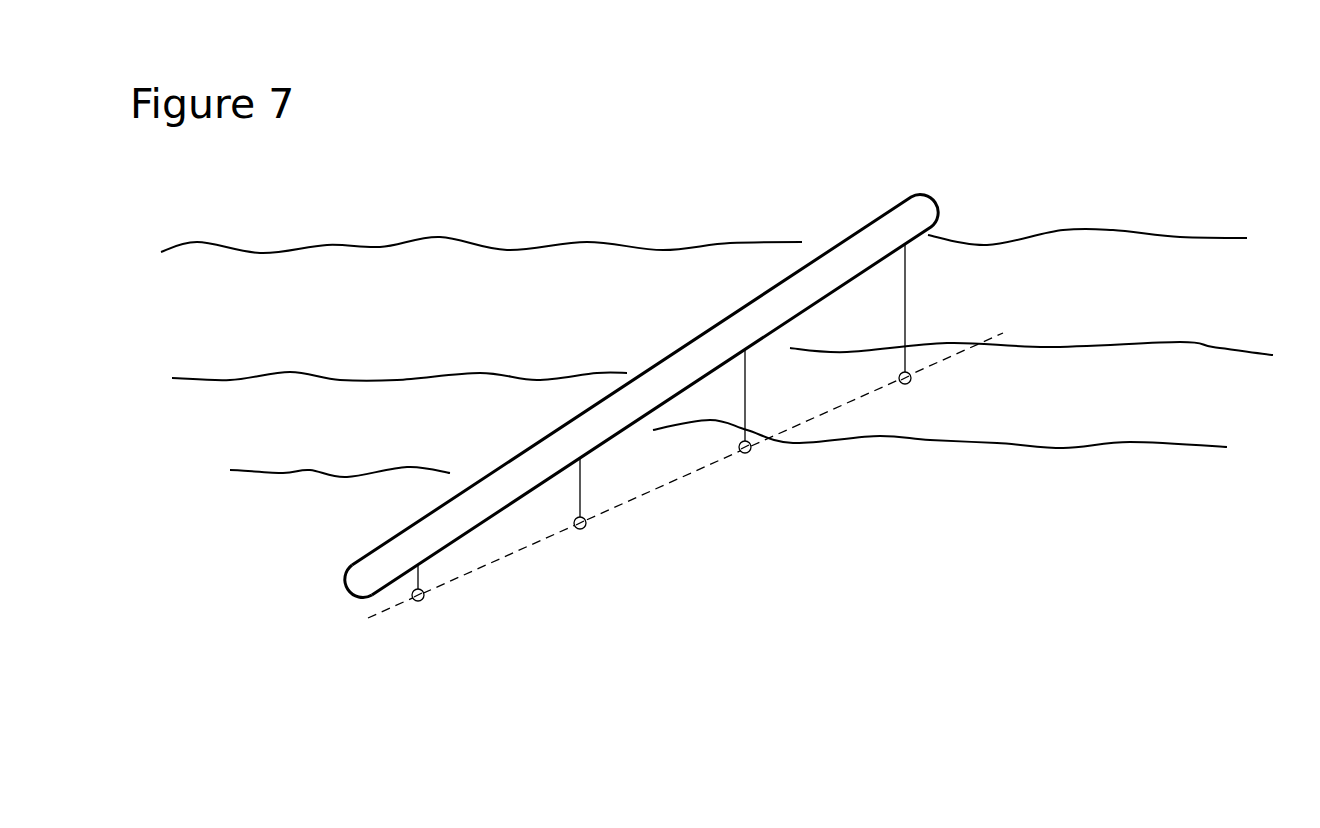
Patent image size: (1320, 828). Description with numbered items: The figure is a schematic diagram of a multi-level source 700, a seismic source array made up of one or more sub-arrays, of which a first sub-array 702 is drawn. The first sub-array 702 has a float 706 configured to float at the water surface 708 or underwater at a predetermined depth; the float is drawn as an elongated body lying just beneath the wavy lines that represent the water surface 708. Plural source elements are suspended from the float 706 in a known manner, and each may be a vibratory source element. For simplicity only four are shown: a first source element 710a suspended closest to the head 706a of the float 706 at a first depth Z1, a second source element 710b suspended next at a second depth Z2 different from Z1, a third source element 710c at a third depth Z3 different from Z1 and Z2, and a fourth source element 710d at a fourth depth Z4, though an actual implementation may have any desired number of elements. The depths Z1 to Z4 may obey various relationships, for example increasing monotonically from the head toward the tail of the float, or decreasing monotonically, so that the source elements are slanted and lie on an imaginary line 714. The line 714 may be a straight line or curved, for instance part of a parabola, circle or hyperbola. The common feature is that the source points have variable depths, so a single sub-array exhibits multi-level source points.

The multi-level source 700 is at (607, 118).
The first sub-array 702 is at (342, 592).
The float 706 is at (554, 443).
The head of float 706a is at (360, 577).
The water surface 708 is at (387, 267).
The first source element 710a is at (416, 601).
The second source element 710b is at (580, 529).
The third source element 710c is at (750, 452).
The fourth source element 710d is at (906, 384).
The imaginary line 714 is at (702, 470).
The first depth Z1 is at (421, 568).
The second depth Z2 is at (581, 485).
The third depth Z3 is at (748, 395).
The fourth depth Z4 is at (907, 290).